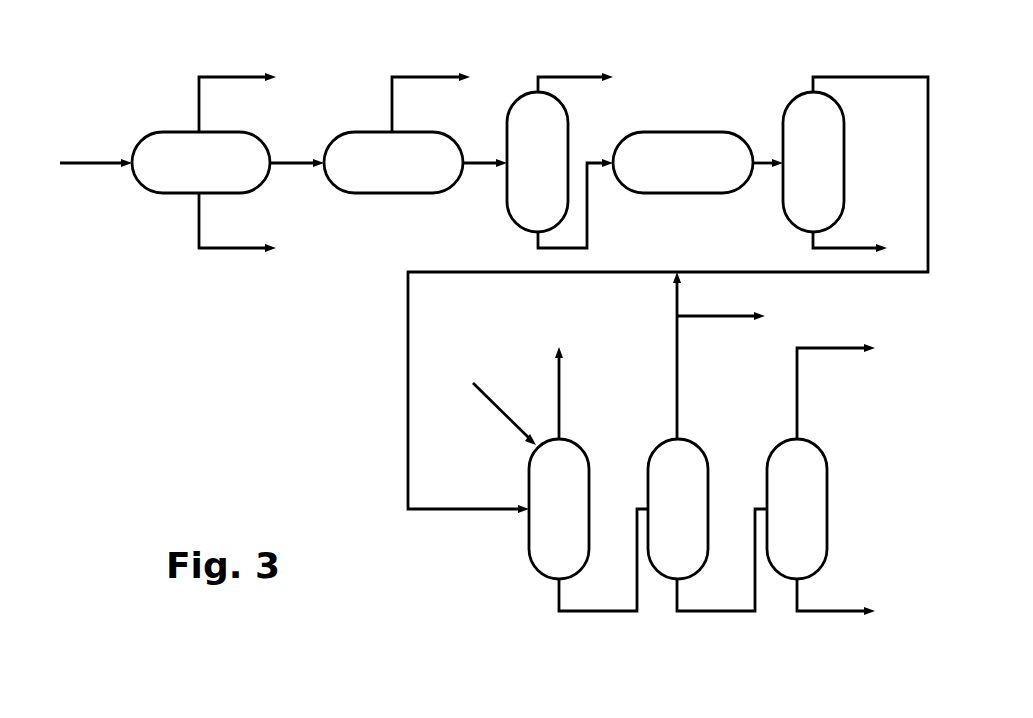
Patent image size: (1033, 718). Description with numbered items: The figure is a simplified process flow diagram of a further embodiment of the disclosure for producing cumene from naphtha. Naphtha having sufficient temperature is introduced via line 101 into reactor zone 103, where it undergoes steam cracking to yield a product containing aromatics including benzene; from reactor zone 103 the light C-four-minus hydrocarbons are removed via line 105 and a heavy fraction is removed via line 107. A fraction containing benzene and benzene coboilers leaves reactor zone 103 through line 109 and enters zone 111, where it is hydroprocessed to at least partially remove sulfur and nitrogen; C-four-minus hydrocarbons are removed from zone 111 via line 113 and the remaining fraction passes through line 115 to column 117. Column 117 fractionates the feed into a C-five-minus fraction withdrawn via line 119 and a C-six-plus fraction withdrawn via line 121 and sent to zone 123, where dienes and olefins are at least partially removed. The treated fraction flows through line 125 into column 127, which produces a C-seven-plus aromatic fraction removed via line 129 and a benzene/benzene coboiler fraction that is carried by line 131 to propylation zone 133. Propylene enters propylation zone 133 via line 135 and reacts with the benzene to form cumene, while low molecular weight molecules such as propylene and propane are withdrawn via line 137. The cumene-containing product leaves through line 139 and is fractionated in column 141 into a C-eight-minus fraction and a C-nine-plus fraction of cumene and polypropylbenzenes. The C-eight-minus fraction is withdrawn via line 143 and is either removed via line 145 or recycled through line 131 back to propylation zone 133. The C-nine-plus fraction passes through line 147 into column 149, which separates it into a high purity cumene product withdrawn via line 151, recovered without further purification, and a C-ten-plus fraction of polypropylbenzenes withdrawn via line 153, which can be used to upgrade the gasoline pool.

The line 101 is at (90, 160).
The reactor zone 103 is at (150, 193).
The line 105 is at (227, 75).
The line 107 is at (227, 246).
The line 109 is at (255, 133).
The zone 111 is at (400, 193).
The line 113 is at (422, 77).
The line 115 is at (480, 165).
The column 117 is at (569, 133).
The line 119 is at (565, 75).
The line 121 is at (593, 166).
The zone 123 is at (695, 132).
The line 125 is at (763, 165).
The column 127 is at (845, 148).
The line 129 is at (842, 246).
The line 131 is at (843, 75).
The propylation zone 133 is at (528, 543).
The line 135 is at (498, 415).
The line 137 is at (560, 407).
The line 139 is at (593, 613).
The column 141 is at (695, 447).
The line 143 is at (680, 383).
The line 145 is at (710, 313).
The line 147 is at (713, 613).
The column 149 is at (830, 485).
The line 151 is at (830, 347).
The line 153 is at (828, 613).